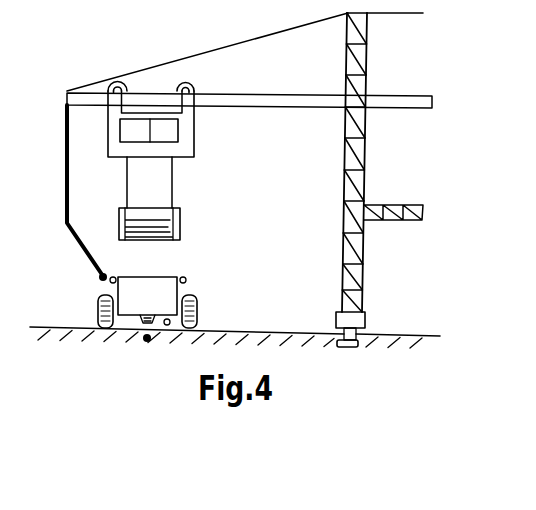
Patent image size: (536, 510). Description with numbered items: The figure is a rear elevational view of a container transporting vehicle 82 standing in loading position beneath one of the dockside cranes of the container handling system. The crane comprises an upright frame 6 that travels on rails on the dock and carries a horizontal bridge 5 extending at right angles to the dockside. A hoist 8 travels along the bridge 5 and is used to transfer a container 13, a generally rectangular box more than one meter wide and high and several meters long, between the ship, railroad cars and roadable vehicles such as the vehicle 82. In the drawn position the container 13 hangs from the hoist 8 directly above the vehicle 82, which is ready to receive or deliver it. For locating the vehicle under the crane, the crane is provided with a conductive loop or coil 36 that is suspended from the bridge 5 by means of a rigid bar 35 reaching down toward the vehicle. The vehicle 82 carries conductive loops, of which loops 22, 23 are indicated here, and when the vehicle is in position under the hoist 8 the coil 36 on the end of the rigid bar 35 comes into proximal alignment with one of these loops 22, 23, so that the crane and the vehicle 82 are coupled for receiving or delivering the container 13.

The horizontal bridge 5 is at (258, 106).
The upright frame 6 is at (358, 188).
The hoist 8 is at (182, 148).
The container 13 is at (165, 225).
The loop 22 is at (105, 274).
The loop 23 is at (156, 263).
The rigid bar 35 is at (90, 257).
The conductive loop or coil 36 is at (100, 282).
The container transporting vehicle 82 is at (164, 278).